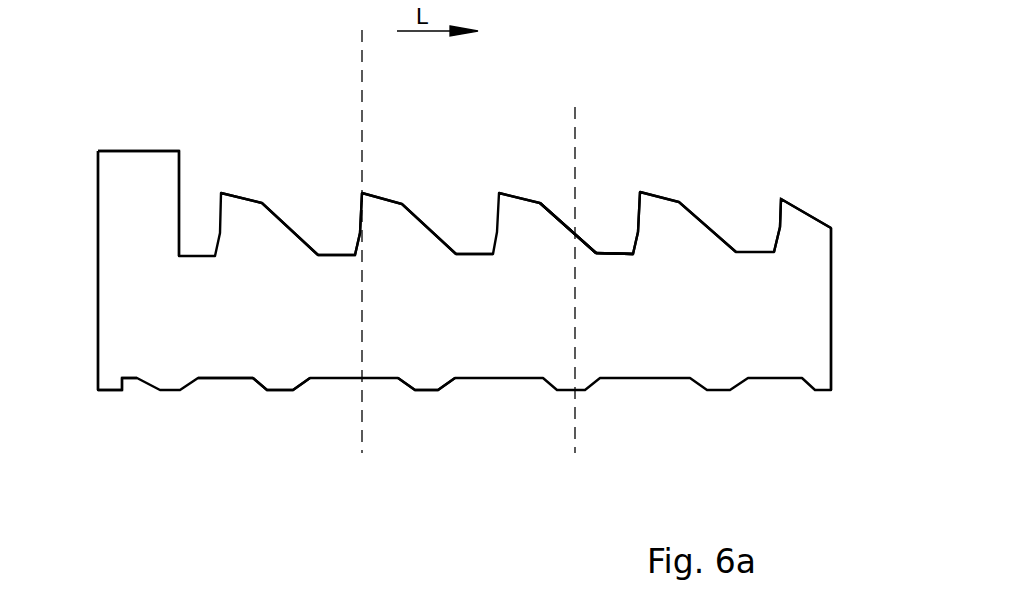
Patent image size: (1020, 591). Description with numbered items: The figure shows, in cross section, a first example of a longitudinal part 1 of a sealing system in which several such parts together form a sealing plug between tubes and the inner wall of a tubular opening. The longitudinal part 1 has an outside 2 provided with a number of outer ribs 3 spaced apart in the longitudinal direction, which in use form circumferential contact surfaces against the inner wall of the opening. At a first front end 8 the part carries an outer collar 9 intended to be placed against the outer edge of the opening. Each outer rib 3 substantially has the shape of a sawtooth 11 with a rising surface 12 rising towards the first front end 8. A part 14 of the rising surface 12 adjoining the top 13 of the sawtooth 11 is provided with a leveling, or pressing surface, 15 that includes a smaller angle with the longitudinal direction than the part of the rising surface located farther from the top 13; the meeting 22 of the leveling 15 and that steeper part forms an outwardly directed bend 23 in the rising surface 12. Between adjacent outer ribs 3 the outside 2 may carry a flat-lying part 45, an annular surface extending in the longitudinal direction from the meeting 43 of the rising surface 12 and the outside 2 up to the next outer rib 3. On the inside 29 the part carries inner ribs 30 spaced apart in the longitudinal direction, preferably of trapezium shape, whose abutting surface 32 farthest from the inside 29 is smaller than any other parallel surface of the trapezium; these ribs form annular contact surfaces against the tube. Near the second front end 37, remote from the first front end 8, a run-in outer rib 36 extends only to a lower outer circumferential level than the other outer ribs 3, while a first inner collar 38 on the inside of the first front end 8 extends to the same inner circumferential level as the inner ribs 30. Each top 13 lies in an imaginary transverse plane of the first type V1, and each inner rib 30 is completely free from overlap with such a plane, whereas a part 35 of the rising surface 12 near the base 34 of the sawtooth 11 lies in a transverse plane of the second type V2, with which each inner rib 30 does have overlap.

The longitudinal part 1 is at (235, 332).
The outside 2 is at (615, 250).
The outer ribs 3 is at (269, 162).
The first front end 8 is at (98, 272).
The outer collar 9 is at (138, 151).
The sawtooth 11 is at (243, 214).
The rising surface 12 is at (409, 162).
The top 13 is at (521, 195).
The part of the rising surface adjoining the top 14 is at (580, 162).
The leveling (pressing surface) 15 is at (580, 162).
The meeting 22 is at (689, 161).
The outwardly directed bend 23 is at (679, 202).
The inside 29 is at (225, 378).
The inner ribs 30 is at (279, 378).
The abutting surface 32 is at (423, 390).
The base 34 is at (610, 289).
The part of the rising surface near the base 35 is at (564, 264).
The run-in outer rib 36 is at (803, 210).
The second front end 37 is at (831, 306).
The first inner collar 38 is at (110, 390).
The meeting of the rising surface and the outside 43 is at (457, 254).
The flat-lying part 45 is at (332, 248).
The transverse plane of a first type V1 is at (382, 265).
The transverse plane of a second type V2 is at (596, 303).